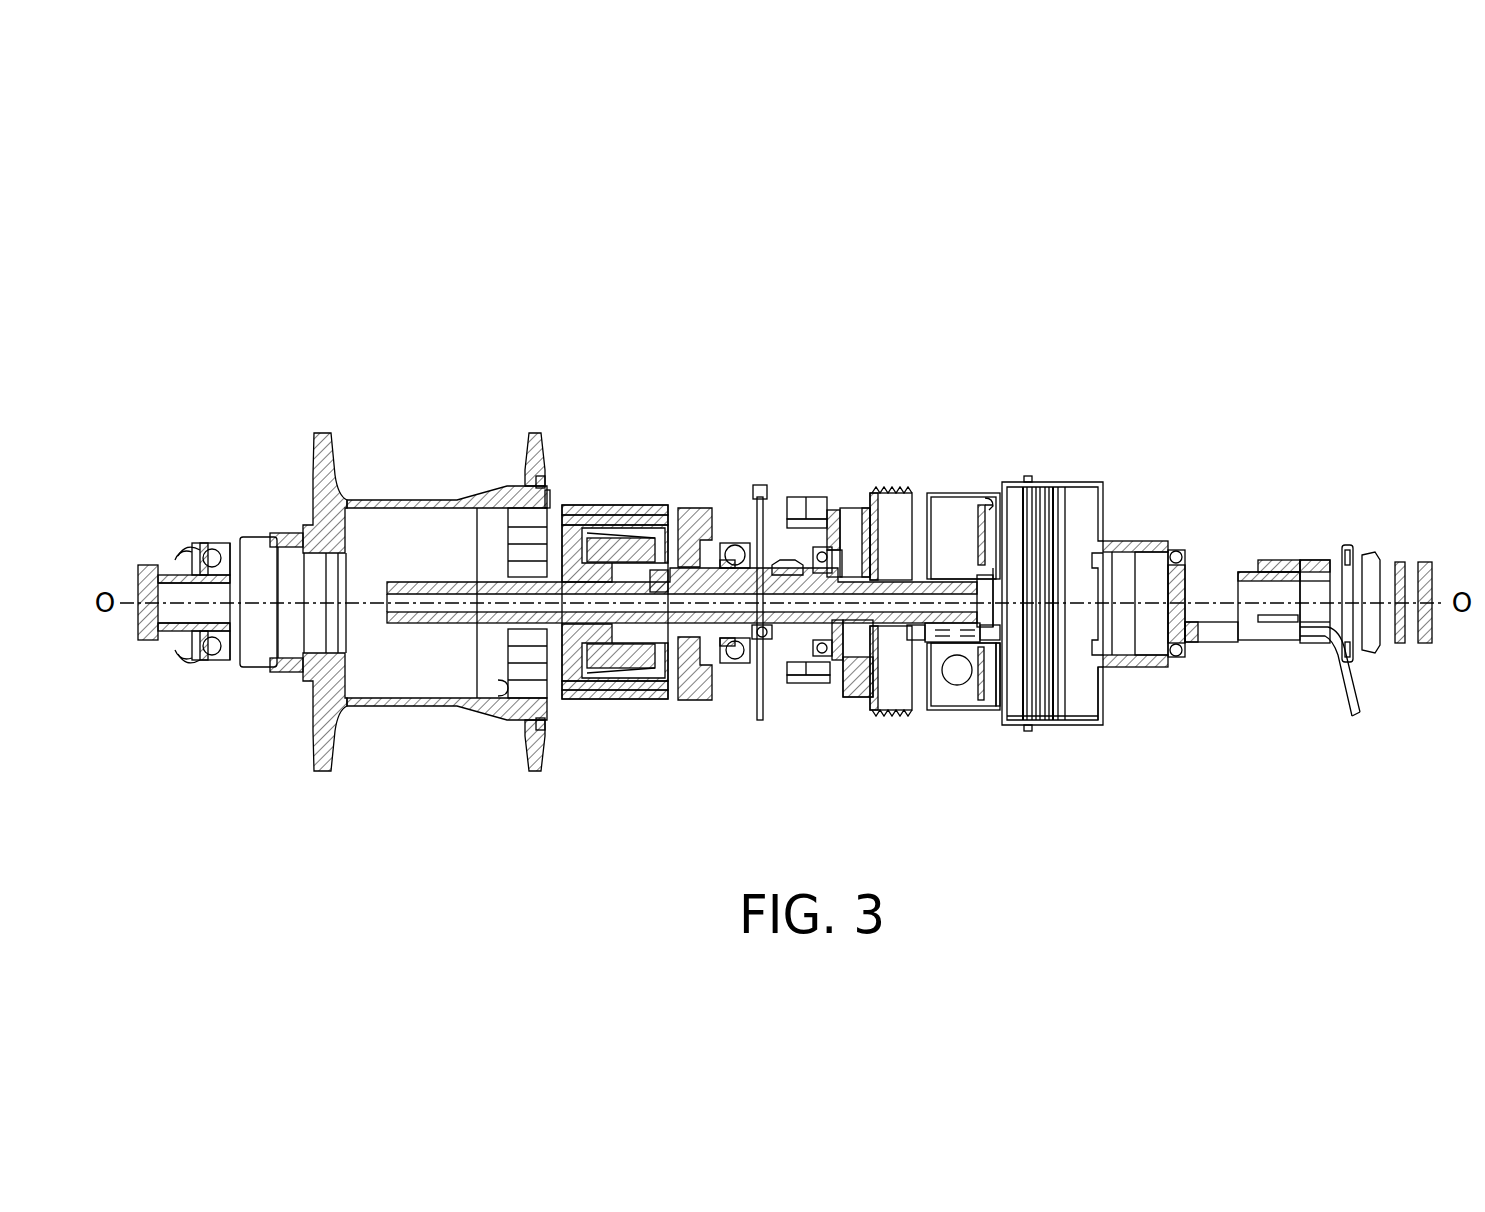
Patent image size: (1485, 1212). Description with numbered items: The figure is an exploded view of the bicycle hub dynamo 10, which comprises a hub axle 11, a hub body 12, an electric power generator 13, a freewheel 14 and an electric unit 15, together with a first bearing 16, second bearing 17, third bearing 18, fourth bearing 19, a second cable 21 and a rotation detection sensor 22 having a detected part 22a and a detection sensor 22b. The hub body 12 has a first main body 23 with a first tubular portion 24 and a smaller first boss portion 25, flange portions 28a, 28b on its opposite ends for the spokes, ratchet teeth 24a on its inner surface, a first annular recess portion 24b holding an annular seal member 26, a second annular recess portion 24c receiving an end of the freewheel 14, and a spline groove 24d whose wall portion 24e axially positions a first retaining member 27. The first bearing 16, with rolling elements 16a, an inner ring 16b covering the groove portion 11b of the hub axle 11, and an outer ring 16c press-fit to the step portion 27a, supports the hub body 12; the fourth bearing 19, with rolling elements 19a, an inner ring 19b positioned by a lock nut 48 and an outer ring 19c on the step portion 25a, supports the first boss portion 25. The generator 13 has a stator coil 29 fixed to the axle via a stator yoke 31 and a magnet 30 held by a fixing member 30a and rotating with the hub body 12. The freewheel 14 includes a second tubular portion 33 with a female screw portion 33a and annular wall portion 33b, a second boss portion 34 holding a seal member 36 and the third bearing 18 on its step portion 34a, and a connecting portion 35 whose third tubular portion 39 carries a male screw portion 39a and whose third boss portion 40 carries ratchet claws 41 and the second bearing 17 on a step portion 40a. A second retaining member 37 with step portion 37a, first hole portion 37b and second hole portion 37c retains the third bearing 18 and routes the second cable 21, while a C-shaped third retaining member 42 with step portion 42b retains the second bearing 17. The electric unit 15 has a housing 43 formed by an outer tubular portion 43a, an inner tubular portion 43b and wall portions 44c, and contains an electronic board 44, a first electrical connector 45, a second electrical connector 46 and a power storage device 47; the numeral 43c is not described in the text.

The hub dynamo 10 is at (1216, 310).
The hub axle 11 is at (432, 625).
The groove portion 11b is at (683, 506).
The hub body 12 is at (300, 445).
The electric power generator 13 is at (640, 470).
The freewheel 14 is at (885, 475).
The electric unit 15 is at (998, 702).
The first bearing 16 is at (733, 540).
The rolling elements 16a is at (734, 662).
The inner ring 16b is at (762, 640).
The outer ring 16c is at (724, 662).
The second bearing 17 is at (826, 545).
The third bearing 18 is at (1180, 548).
The fourth bearing 19 is at (210, 541).
The rolling elements 19a is at (213, 662).
The inner ring 19b is at (190, 642).
The outer ring 19c is at (215, 650).
The second cable 21 is at (1222, 643).
The rotation detection sensor 22 is at (1183, 350).
The detected part 22a is at (1125, 490).
The detection sensor 22b is at (1073, 484).
The first main body 23 is at (440, 470).
The first tubular portion 24 is at (383, 499).
The ratchet teeth 24a is at (515, 540).
The first annular recess portion 24b is at (549, 496).
The second annular recess portion 24c is at (541, 485).
The spline groove 24d is at (538, 724).
The wall portion 24e is at (500, 688).
The first boss portion 25 is at (275, 535).
The step portion 25a is at (292, 577).
The annular seal member 26 is at (758, 470).
The first retaining member 27 is at (697, 507).
The step portion 27a is at (695, 702).
The flange portion 28a is at (535, 432).
The flange portion 28b is at (323, 432).
The stator coil 29 is at (620, 700).
The magnet 30 is at (592, 700).
The fixing member 30a is at (596, 700).
The stator yoke 31 is at (562, 700).
The second tubular portion 33 is at (1080, 728).
The female screw portion 33a is at (1035, 723).
The annular wall portion 33b is at (1103, 700).
The second boss portion 34 is at (1136, 670).
The step portion 34a is at (1150, 540).
The connecting portion 35 is at (855, 712).
The seal member 36 is at (1350, 545).
The second retaining member 37 is at (1285, 558).
The step portion 37a is at (1265, 559).
The first hole portion 37b is at (1275, 623).
The second hole portion 37c is at (1320, 640).
The third tubular portion 39 is at (876, 714).
The male screw portion 39a is at (894, 719).
The third boss portion 40 is at (848, 702).
The step portion 40a is at (832, 656).
The ratchet claw 41 is at (820, 496).
The third retaining member 42 is at (763, 555).
The step portion 42b is at (783, 557).
The housing 43 is at (935, 712).
The outer tubular portion 43a is at (950, 492).
The inner tubular portion 43b is at (979, 503).
The housing clip 43c is at (1000, 495).
The electronic board 44 is at (980, 710).
The wall portions 44c is at (927, 492).
The first electrical connector 45 is at (920, 642).
The second electrical connector 46 is at (1000, 652).
The power storage device 47 is at (960, 672).
The lock nut 48 is at (148, 642).